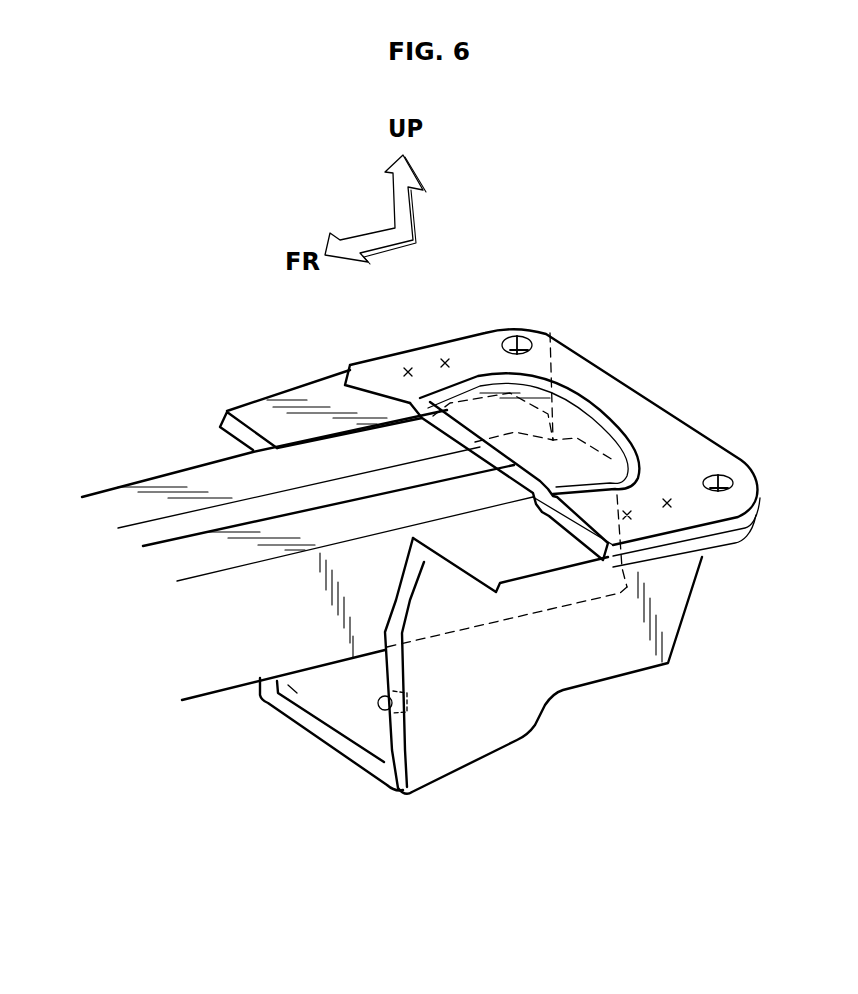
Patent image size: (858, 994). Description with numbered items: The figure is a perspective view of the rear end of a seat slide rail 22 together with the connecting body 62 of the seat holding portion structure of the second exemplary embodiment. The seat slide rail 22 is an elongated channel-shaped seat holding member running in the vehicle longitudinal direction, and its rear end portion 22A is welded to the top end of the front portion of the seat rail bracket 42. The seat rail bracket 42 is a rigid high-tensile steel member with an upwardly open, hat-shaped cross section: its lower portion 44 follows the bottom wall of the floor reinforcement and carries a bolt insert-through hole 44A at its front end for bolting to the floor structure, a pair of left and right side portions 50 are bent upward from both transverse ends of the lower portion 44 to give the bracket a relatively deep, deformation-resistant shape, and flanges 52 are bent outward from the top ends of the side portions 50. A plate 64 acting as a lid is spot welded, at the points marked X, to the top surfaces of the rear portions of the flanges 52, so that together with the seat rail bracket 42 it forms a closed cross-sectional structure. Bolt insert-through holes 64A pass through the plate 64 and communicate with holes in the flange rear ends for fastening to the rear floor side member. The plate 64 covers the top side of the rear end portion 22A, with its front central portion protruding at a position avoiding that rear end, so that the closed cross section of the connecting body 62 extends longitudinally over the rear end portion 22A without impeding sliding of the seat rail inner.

The seat slide rail 22 is at (205, 456).
The rear end portion of the seat slide rail 22A is at (483, 418).
The seat rail bracket 42 is at (225, 376).
The lower portion of the seat rail bracket 44 is at (353, 718).
The bolt insert-through hole 44A is at (388, 712).
The side portions 50 is at (298, 680).
The flanges 52 is at (312, 386).
The connecting body 62 is at (686, 350).
The plate 64 is at (680, 440).
The bolt insert-through holes 64A is at (520, 342).